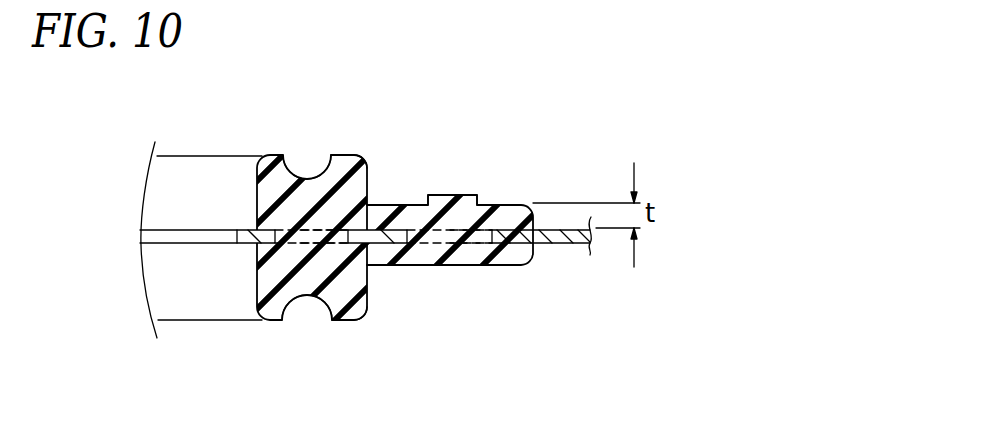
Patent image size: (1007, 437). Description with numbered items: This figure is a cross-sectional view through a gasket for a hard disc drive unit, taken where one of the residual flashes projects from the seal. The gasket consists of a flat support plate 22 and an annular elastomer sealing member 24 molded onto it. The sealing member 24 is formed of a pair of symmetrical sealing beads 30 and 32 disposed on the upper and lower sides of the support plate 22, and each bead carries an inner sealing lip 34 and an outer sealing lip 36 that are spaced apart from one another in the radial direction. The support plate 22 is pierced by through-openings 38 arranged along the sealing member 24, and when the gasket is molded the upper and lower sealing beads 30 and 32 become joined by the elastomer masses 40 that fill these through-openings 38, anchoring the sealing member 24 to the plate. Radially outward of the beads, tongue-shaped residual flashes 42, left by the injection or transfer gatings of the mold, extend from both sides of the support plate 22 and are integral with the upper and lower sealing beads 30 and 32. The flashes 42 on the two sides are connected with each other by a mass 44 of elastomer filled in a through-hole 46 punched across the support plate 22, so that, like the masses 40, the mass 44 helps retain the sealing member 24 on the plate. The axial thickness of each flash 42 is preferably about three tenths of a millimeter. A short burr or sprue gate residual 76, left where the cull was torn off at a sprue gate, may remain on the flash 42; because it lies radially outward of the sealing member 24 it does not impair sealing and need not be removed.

The support plate 22 is at (563, 243).
The sealing member 24 is at (264, 196).
The sealing bead 30 is at (367, 186).
The sealing bead 32 is at (355, 280).
The inner sealing lip 34 is at (287, 155).
The outer sealing lip 36 is at (353, 158).
The through-opening 38 is at (333, 238).
The elastomer mass 40 is at (316, 228).
The residual flash 42 is at (514, 214).
The mass of elastomer material 44 is at (462, 238).
The through-hole 46 is at (423, 245).
The sprue gate residual 76 is at (452, 195).